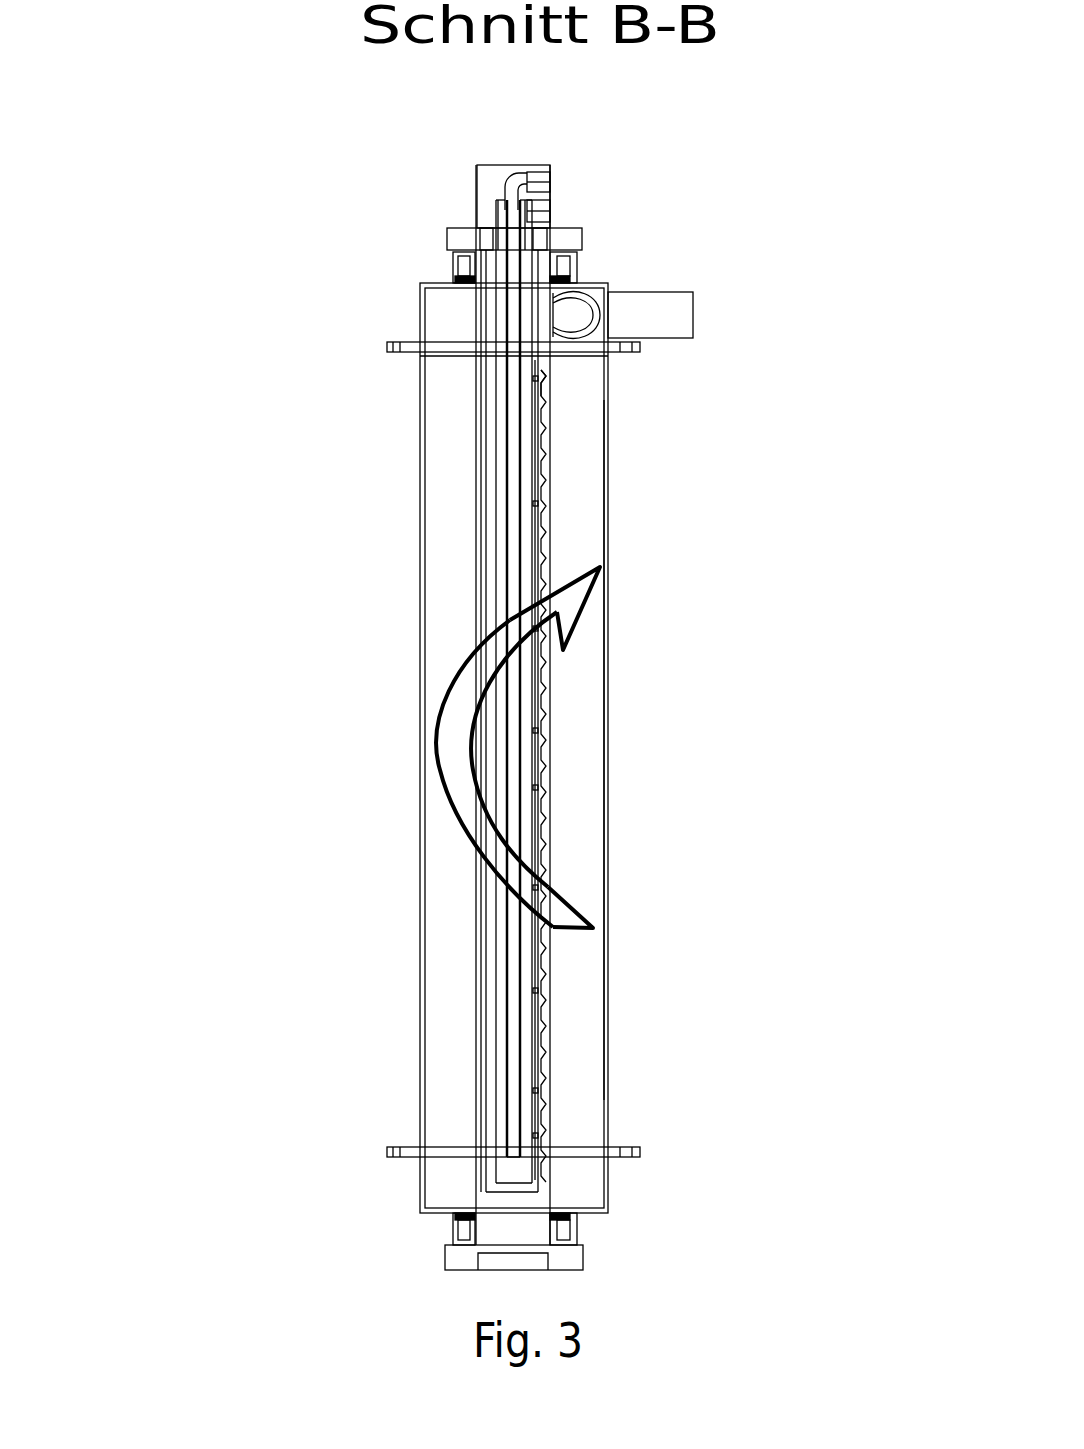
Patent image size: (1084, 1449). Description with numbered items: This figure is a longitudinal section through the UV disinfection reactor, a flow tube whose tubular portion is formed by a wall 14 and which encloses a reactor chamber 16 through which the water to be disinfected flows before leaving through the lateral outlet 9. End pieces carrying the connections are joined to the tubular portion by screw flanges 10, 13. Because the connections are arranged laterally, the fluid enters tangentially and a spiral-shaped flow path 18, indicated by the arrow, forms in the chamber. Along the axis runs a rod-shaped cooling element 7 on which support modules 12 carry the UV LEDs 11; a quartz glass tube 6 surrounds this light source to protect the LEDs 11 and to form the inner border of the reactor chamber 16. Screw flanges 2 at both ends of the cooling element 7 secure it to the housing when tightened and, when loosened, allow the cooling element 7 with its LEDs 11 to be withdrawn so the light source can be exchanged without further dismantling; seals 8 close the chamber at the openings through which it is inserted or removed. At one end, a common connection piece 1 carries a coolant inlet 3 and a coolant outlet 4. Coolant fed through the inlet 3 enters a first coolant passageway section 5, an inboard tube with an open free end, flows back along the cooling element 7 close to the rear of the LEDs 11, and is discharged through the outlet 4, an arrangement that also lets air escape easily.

The connection piece 1 is at (487, 170).
The screw flange 2 is at (453, 240).
The coolant inlet 3 is at (541, 178).
The coolant outlet 4 is at (541, 208).
The first coolant passageway section 5 is at (517, 229).
The quartz glass tube 6 is at (460, 253).
The cooling element 7 is at (490, 305).
The seal 8 is at (470, 280).
The outlet 9 is at (643, 313).
The screw flange 10 is at (640, 350).
The UV LED 11 is at (548, 393).
The support module 12 is at (543, 455).
The screw flange 13 is at (633, 1155).
The wall 14 is at (418, 580).
The reactor chamber 16 is at (577, 665).
The flow path 18 is at (453, 837).